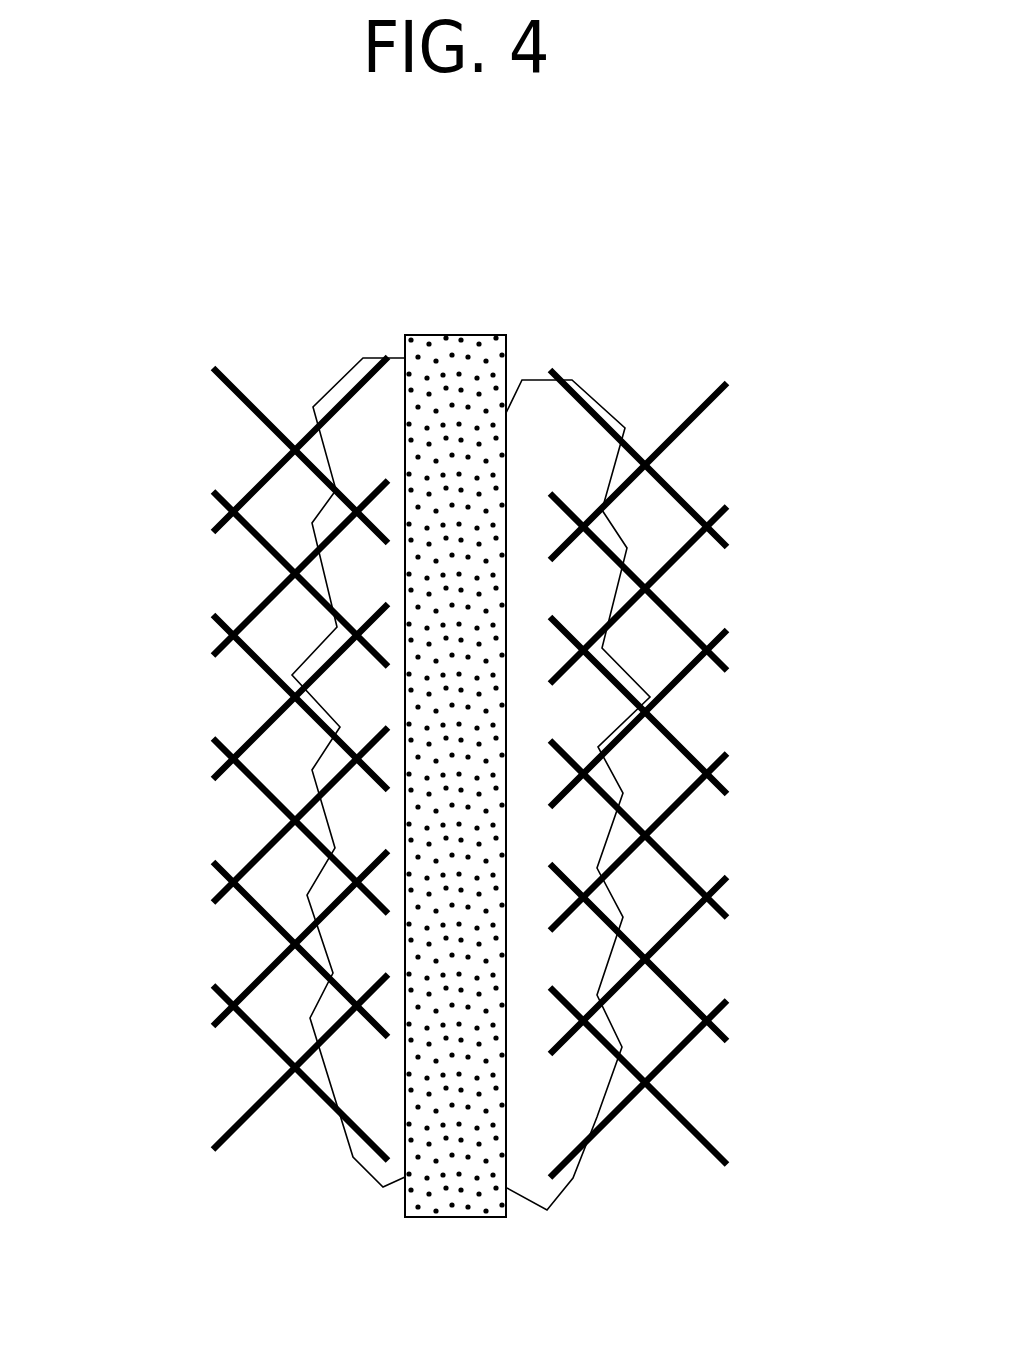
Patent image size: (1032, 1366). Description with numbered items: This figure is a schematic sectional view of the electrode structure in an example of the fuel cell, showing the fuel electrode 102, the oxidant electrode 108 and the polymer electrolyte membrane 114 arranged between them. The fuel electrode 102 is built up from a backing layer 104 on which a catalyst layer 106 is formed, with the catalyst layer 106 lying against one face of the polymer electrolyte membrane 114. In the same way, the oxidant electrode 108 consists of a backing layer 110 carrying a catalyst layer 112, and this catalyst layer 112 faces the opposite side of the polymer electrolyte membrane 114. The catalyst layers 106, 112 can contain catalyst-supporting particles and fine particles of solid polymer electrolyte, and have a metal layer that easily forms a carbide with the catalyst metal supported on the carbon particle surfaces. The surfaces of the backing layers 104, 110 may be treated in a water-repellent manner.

The fuel electrode 102 is at (180, 313).
The backing layer 104 is at (263, 793).
The catalyst layer 106 is at (307, 1237).
The oxidant electrode 108 is at (515, 310).
The backing layer 110 is at (680, 490).
The catalyst layer 112 is at (507, 1235).
The polymer electrolyte membrane 114 is at (455, 347).